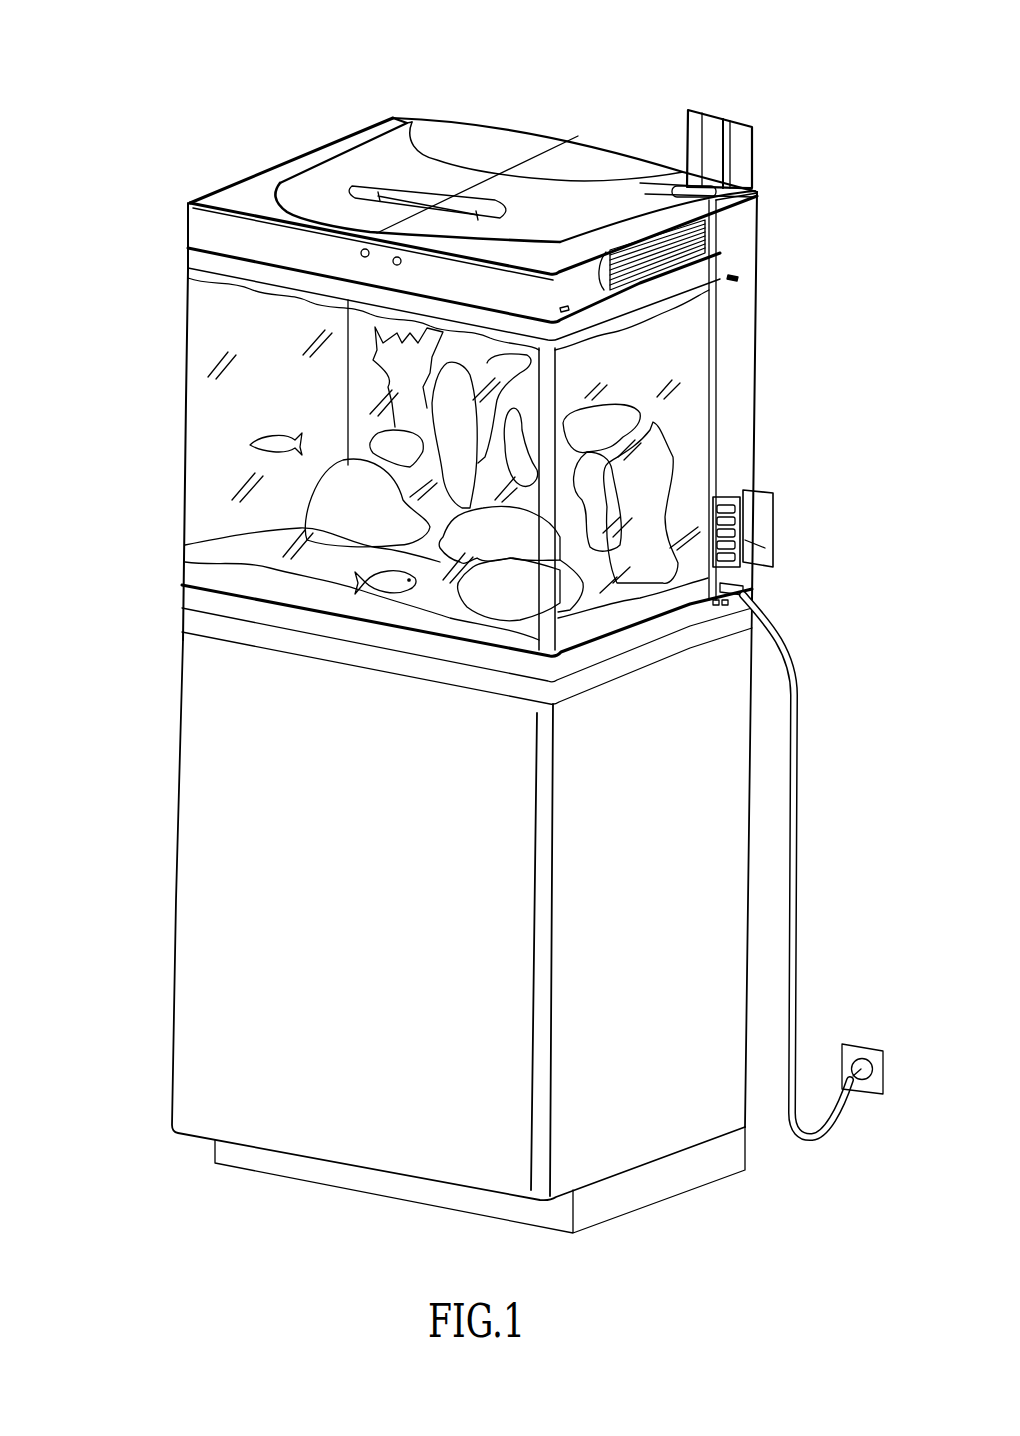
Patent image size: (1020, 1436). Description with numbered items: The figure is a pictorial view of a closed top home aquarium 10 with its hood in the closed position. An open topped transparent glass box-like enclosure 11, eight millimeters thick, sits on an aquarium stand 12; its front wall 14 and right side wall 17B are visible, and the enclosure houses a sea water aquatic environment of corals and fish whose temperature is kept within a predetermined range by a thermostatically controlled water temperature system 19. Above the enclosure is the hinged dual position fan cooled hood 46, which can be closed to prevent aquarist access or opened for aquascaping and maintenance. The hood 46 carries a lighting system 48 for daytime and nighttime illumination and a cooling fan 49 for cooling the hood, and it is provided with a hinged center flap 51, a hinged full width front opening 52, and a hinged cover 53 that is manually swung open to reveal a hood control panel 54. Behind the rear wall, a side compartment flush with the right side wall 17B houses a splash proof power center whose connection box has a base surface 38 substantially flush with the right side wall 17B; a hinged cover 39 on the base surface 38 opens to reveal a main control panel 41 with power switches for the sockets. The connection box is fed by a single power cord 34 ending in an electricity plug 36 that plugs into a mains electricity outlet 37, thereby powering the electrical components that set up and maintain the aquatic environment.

The closed top home aquarium 10 is at (824, 62).
The thermostatically controlled water temperature system 19 is at (163, 169).
The hinged dual position fan cooled hood 46 is at (316, 130).
The lighting system 48 is at (247, 148).
The hinged center flap 51 is at (510, 145).
The hinged full width front opening 52 is at (207, 228).
The hinged cover 53 is at (713, 118).
The hood control panel 54 is at (738, 166).
The cooling fan 49 is at (722, 227).
The base surface 38 is at (740, 320).
The right side wall 17B is at (683, 405).
The hinged cover 39 is at (757, 500).
The main control panel 41 is at (773, 548).
The box-like enclosure 11 is at (207, 333).
The front wall 14 is at (233, 522).
The aquarium stand 12 is at (207, 858).
The power cord 34 is at (795, 905).
The mains electricity outlet 37 is at (853, 1050).
The electricity plug 36 is at (863, 1082).